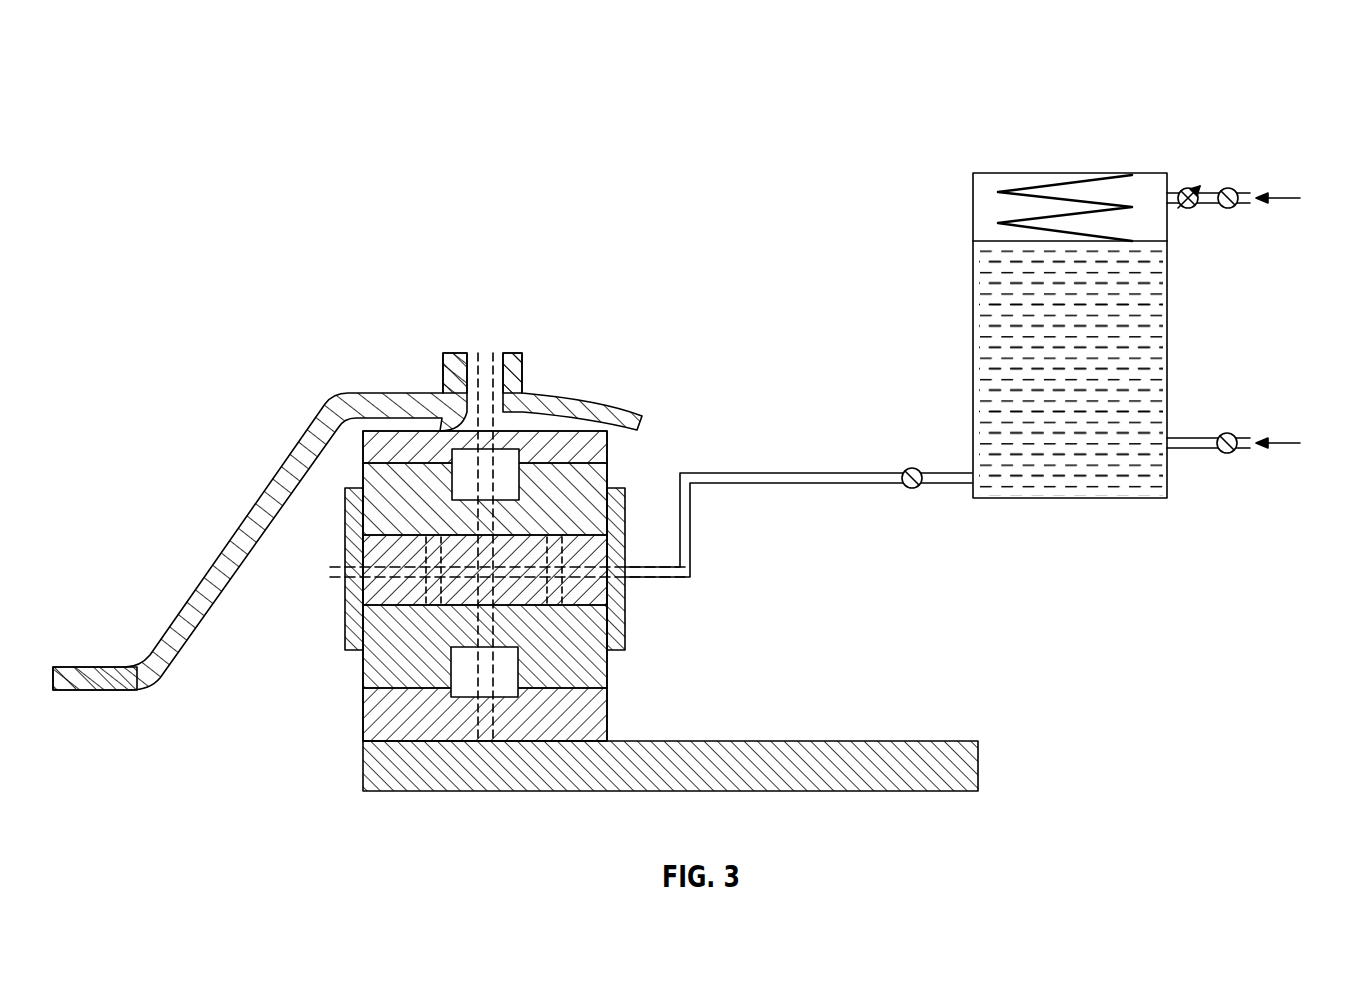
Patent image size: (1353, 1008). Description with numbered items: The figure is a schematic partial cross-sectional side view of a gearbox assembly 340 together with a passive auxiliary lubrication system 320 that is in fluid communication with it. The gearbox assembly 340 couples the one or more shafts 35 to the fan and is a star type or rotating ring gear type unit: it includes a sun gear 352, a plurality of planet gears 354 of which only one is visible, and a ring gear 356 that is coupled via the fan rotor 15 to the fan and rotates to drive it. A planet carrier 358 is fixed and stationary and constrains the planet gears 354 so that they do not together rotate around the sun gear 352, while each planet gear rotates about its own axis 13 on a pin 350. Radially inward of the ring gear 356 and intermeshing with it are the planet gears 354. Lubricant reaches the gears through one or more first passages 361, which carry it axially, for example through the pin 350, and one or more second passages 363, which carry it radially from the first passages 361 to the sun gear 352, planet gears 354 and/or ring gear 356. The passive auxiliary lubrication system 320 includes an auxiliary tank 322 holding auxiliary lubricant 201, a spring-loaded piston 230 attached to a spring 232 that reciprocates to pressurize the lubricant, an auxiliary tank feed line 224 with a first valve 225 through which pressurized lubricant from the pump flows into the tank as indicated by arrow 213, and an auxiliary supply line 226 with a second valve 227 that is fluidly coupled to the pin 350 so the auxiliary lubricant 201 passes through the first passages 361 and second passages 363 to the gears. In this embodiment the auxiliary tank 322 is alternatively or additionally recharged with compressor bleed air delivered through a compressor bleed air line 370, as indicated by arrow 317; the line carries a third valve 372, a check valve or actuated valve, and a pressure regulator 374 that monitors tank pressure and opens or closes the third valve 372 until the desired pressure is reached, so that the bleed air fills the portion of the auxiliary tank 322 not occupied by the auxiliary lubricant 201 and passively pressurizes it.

The gearbox assembly 340 is at (198, 156).
The passive auxiliary lubrication system 320 is at (1170, 60).
The auxiliary tank 322 is at (995, 173).
The spring 232 is at (1040, 185).
The piston 230 is at (988, 240).
The auxiliary lubricant 201 is at (978, 300).
The compressor bleed air line 370 is at (1215, 190).
The pressure regulator 374 is at (1190, 188).
The third valve 372 is at (1236, 190).
The arrow 317 is at (1290, 198).
The auxiliary tank feed line 224 is at (1187, 438).
The first valve 225 is at (1228, 433).
The arrow 213 is at (1290, 443).
The second valve 227 is at (912, 467).
The auxiliary supply line 226 is at (830, 472).
The ring gear 356 is at (428, 430).
The second passages 363 is at (495, 435).
The first passages 361 is at (627, 489).
The planet carrier 358 is at (345, 545).
The pin 350 is at (627, 545).
The planet gears 354 is at (322, 455).
The fan rotor 15 is at (82, 665).
The sun gear 352 is at (363, 700).
The axis 13 is at (607, 608).
The shafts 35 is at (910, 791).